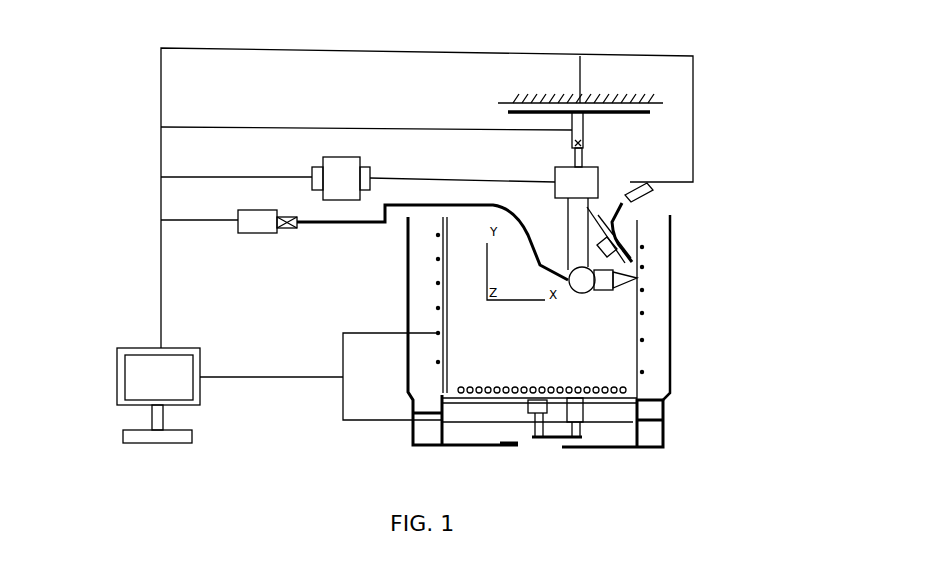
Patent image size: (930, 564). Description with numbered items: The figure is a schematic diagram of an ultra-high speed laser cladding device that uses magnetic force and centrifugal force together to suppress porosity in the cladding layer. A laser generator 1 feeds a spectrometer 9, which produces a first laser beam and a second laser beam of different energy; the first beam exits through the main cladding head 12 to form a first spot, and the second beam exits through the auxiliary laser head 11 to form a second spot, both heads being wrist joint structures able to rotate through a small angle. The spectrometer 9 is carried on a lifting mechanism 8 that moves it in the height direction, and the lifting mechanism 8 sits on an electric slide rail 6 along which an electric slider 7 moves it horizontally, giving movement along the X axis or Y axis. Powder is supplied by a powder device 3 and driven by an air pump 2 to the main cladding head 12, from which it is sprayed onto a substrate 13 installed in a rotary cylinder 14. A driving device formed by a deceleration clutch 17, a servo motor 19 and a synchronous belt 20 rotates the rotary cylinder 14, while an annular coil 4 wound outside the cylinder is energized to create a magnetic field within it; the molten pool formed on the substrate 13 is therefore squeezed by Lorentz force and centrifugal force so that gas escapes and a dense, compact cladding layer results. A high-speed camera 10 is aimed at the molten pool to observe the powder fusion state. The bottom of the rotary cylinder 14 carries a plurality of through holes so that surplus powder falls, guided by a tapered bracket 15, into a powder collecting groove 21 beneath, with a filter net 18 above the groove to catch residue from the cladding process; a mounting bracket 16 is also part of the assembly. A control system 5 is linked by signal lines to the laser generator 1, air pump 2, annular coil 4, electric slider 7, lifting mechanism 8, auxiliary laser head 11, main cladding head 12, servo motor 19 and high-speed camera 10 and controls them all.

The laser generator 1 is at (340, 176).
The air pump 2 is at (260, 223).
The powder device 3 is at (288, 221).
The annular coil 4 is at (437, 308).
The control system 5 is at (155, 377).
The electric slide rail 6 is at (560, 99).
The electric slider 7 is at (580, 114).
The lifting mechanism 8 is at (580, 142).
The spectrometer 9 is at (577, 187).
The high-speed camera 10 is at (637, 195).
The auxiliary laser head 11 is at (640, 247).
The main cladding head 12 is at (638, 270).
The substrate 13 is at (640, 290).
The rotary cylinder 14 is at (548, 392).
The bracket 15 is at (545, 403).
The mounting bracket 16 is at (583, 403).
The deceleration clutch 17 is at (592, 412).
The filter net 18 is at (583, 418).
The servo motor 19 is at (575, 430).
The synchronous belt 20 is at (560, 439).
The powder collecting groove 21 is at (427, 431).